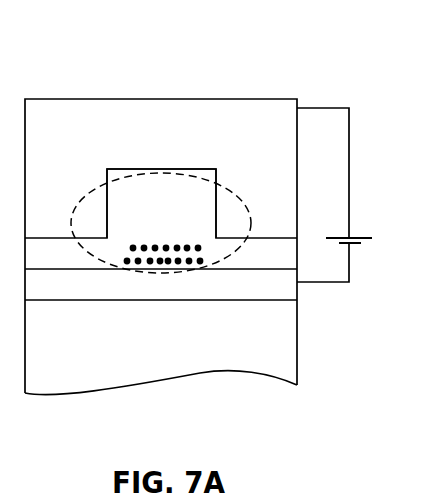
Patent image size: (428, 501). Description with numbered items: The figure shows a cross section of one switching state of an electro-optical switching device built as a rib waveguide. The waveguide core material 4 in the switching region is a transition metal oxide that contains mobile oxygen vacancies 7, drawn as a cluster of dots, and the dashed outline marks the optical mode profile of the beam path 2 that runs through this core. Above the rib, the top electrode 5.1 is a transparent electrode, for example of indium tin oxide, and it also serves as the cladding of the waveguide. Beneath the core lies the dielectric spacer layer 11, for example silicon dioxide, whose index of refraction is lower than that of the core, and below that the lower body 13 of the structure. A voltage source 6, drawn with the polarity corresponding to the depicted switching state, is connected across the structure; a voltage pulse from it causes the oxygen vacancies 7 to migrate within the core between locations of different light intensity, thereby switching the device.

The top electrode 5.1 is at (138, 117).
The waveguide core material 4 is at (118, 192).
The beam path 2 is at (236, 195).
The oxygen vacancies 7 is at (177, 245).
The dielectric spacer layer 11 is at (48, 287).
The substrate 13 is at (180, 353).
The voltage source 6 is at (352, 247).